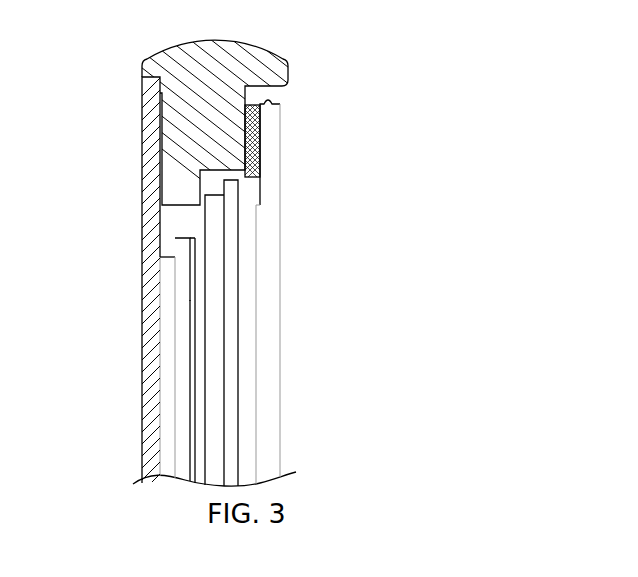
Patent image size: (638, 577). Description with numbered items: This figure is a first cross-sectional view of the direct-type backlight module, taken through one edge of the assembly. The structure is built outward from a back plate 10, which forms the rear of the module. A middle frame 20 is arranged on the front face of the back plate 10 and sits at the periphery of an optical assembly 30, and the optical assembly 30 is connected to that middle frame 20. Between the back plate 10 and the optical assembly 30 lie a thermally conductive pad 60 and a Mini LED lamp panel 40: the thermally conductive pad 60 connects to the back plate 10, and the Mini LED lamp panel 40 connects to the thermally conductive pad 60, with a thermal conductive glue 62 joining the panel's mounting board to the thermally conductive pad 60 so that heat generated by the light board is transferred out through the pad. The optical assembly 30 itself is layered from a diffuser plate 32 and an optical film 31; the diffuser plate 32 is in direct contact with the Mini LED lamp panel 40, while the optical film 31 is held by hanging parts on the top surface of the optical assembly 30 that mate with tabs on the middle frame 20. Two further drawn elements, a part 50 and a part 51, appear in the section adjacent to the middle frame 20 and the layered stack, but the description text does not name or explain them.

The back plate 10 is at (153, 131).
The middle frame 20 is at (170, 70).
The optical assembly 30 is at (312, 333).
The optical film 31 is at (233, 283).
The diffuser plate 32 is at (215, 358).
The Mini LED lamp panel 40 is at (197, 440).
The sleeve 50 is at (265, 212).
The seal member 51 is at (167, 278).
The thermally conductive pad 60 is at (178, 305).
The thermal conductive glue 62 is at (193, 397).